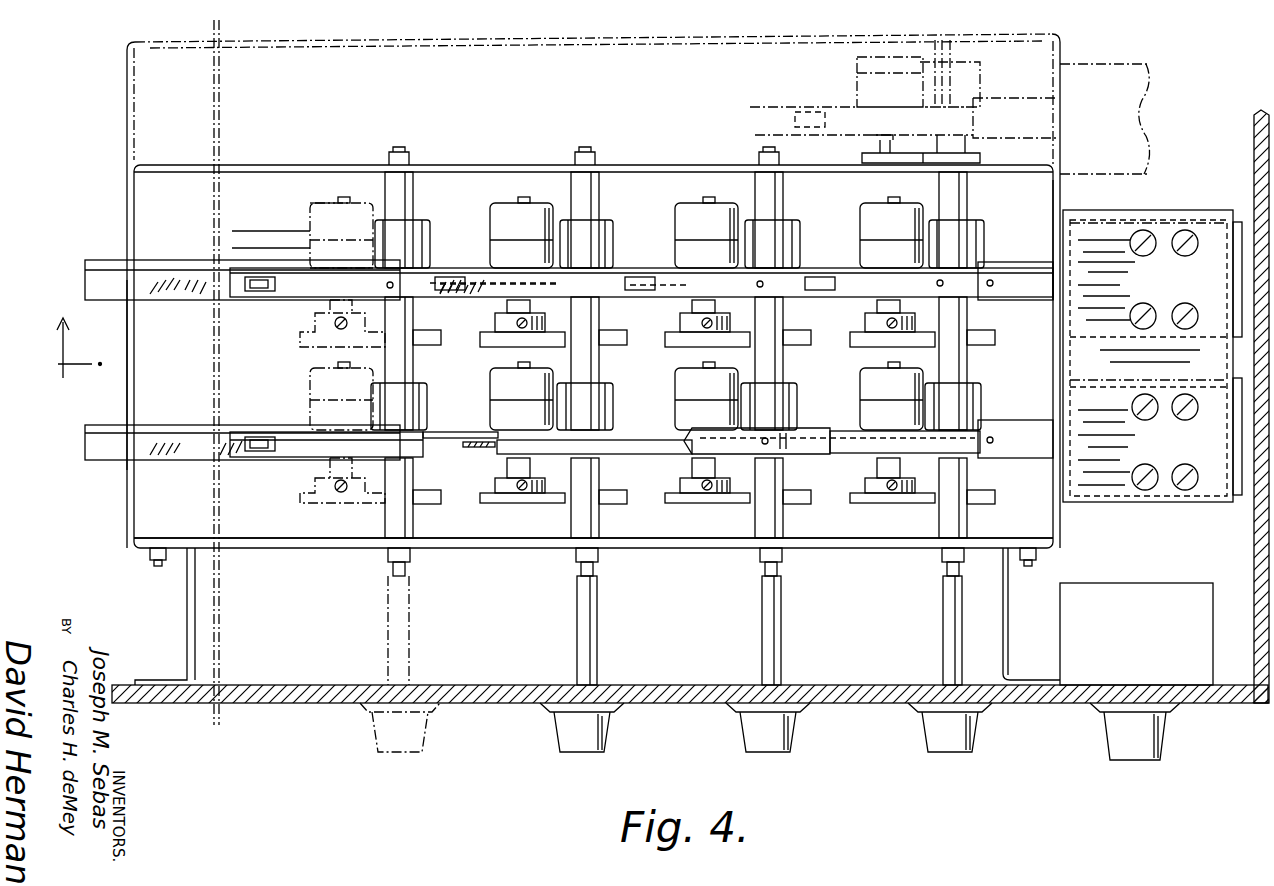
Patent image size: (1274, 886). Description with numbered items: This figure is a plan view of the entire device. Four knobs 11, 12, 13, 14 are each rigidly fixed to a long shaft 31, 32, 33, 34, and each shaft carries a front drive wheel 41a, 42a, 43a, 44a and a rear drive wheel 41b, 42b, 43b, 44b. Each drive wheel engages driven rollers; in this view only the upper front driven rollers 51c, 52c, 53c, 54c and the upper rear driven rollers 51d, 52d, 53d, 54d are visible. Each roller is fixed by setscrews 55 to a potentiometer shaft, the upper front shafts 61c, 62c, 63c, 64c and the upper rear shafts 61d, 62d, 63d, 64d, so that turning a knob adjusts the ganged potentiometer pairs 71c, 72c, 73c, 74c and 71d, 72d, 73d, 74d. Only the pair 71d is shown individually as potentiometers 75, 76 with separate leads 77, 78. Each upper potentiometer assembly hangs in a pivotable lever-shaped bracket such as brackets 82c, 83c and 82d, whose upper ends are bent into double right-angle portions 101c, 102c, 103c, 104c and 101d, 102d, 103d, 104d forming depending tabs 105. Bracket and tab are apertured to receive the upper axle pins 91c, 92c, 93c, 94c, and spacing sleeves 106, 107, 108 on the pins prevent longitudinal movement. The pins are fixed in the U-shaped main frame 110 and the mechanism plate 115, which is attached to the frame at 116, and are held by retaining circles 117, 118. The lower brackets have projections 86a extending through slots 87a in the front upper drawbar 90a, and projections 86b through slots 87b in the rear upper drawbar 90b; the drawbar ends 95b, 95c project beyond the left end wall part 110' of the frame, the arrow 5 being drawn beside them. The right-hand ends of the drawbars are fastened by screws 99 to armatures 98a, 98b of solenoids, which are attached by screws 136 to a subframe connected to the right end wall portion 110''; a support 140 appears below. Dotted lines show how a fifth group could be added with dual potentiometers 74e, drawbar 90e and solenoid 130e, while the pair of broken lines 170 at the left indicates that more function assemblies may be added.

The section line 5 is at (70, 343).
The knob 11 is at (378, 750).
The knob 12 is at (565, 752).
The knob 13 is at (790, 752).
The knob 14 is at (960, 755).
The shaft 31 is at (410, 648).
The shaft 32 is at (597, 646).
The shaft 33 is at (781, 645).
The shaft 34 is at (943, 638).
The front drive wheel 41a is at (430, 504).
The rear driving wheel 41b is at (434, 334).
The front drive wheel 42a is at (610, 504).
The rear driving wheel 42b is at (618, 332).
The front drive wheel 43a is at (798, 504).
The rear driving wheel 43b is at (803, 332).
The front drive wheel 44a is at (992, 504).
The rear driving wheel 44b is at (992, 330).
The upper front driven wheel 51c is at (315, 503).
The upper rear driven wheel 51d is at (300, 340).
The upper front driven wheel 52c is at (515, 503).
The upper rear driven wheel 52d is at (515, 347).
The upper front driven wheel 53c is at (698, 503).
The upper rear driven wheel 53d is at (680, 324).
The upper front driven wheel 54c is at (875, 503).
The upper rear driven wheel 54d is at (875, 347).
The setscrew 55 is at (335, 323).
The upper front potentiometer shaft 61c is at (335, 470).
The rear upper potentiometer shaft 61d is at (330, 308).
The upper front potentiometer shaft 62c is at (507, 470).
The rear upper potentiometer shaft 62d is at (507, 303).
The upper front potentiometer shaft 63c is at (692, 466).
The rear upper potentiometer shaft 63d is at (692, 303).
The upper front potentiometer shaft 64c is at (877, 468).
The rear upper potentiometer shaft 64d is at (877, 303).
The ganged potentiometer pair 71c is at (310, 385).
The ganged potentiometer pair 71d is at (312, 212).
The ganged potentiometer pair 72c is at (490, 380).
The ganged potentiometer pair 72d is at (490, 215).
The ganged potentiometer pair 73c is at (675, 378).
The ganged potentiometer pair 73d is at (675, 214).
The ganged potentiometer pair 74c is at (860, 382).
The ganged potentiometer pair 74d is at (860, 215).
The dual potentiometers 74e is at (857, 68).
The potentiometer 75 is at (322, 206).
The potentiometer 76 is at (341, 255).
The electrical lead 77 is at (250, 231).
The electrical lead 78 is at (250, 248).
The depending pivotable bracket 82c is at (476, 432).
The depending pivotable bracket 82d is at (500, 283).
The depending pivotable bracket 83c is at (664, 440).
The projection 86a is at (255, 458).
The projection 86b is at (275, 286).
The clip 87a is at (252, 452).
The slot 87b is at (255, 292).
The front upper drawbar 90a is at (170, 462).
The rear upper drawbar 90b is at (183, 304).
The drawbar 90e is at (765, 105).
The upper axle pin 91c is at (405, 580).
The upper axle pin 92c is at (593, 580).
The upper axle pin 93c is at (777, 580).
The upper axle pin 94c is at (959, 580).
The drawbar end 95b is at (98, 258).
The drawbar end 95c is at (100, 462).
The armature 98a is at (1055, 428).
The armature 98b is at (1048, 262).
The screw 99 is at (995, 275).
The double right-angle bent portion 101c is at (427, 392).
The double right-angle bent portion 101d is at (430, 238).
The double right-angle bent portion 102c is at (613, 390).
The double right-angle bent portion 102d is at (613, 232).
The double right-angle bent portion 103c is at (797, 398).
The double right-angle bent portion 103d is at (800, 232).
The right-angle upper end 104c is at (981, 400).
The right-angle upper end 104d is at (984, 230).
The depending tab portion 105 is at (378, 218).
The spacing sleeve 106 is at (413, 186).
The spacing sleeve 107 is at (413, 356).
The spacing sleeve 108 is at (385, 534).
The main frame 110 is at (593, 336).
The left-hand end wall part 110' is at (154, 375).
The right-hand end wall portion 110'' is at (1106, 239).
The mechanism plate 115 is at (262, 549).
The fastening 116 is at (165, 562).
The retaining circle 117 is at (388, 560).
The retaining circle 118 is at (389, 158).
The solenoid 130e is at (1143, 62).
The screw 136 is at (1150, 256).
The support 140 is at (1145, 772).
The pair of broken lines 170 is at (222, 98).